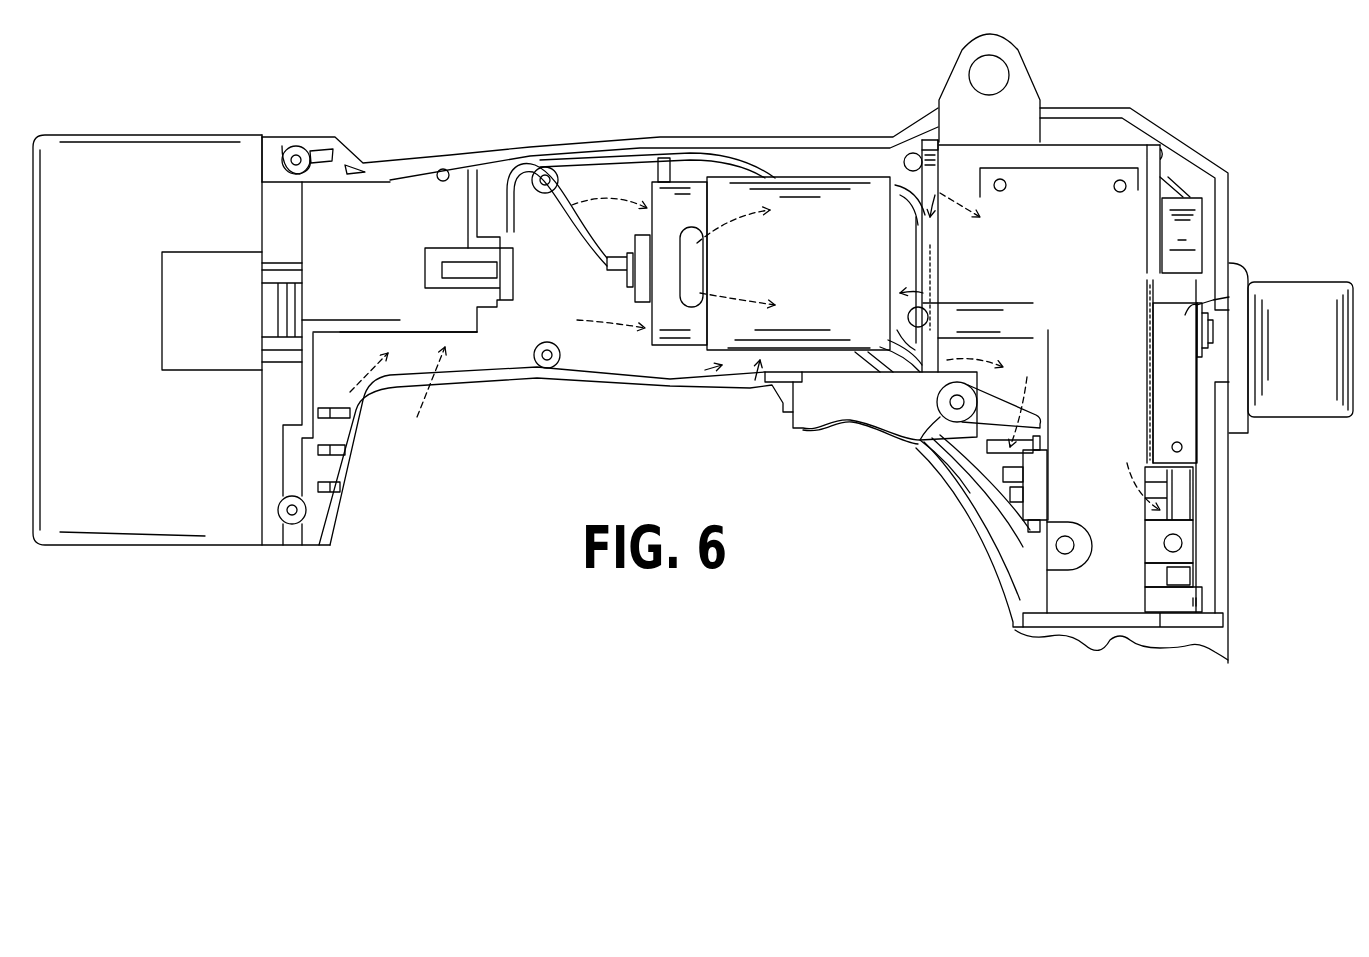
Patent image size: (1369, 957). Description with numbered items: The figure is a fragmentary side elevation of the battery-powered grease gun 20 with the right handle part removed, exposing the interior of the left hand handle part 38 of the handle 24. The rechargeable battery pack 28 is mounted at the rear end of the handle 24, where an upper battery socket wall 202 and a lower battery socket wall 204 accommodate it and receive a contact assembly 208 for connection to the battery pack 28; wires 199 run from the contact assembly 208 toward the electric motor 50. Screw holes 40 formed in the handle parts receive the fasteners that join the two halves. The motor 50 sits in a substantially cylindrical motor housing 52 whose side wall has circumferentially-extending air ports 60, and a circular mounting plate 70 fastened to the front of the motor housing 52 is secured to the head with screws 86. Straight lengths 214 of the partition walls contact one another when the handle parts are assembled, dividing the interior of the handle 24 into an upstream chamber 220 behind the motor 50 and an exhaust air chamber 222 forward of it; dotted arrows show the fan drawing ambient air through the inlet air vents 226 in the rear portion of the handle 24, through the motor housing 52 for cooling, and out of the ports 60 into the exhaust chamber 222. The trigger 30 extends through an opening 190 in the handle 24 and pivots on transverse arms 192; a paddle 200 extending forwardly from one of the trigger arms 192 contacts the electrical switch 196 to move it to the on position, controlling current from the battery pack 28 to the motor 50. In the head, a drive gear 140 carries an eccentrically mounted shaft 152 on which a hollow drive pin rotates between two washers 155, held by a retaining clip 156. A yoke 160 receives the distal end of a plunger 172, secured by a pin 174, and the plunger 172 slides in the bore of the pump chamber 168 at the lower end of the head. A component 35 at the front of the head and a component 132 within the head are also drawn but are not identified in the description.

The grease gun 20 is at (693, 106).
The handle 24 is at (817, 135).
The rechargeable battery pack 28 is at (170, 153).
The trigger 30 is at (873, 412).
The chuck 35 is at (1325, 407).
The left hand handle part 38 is at (515, 380).
The screw holes 40 is at (297, 150).
The electric motor 50 is at (753, 383).
The motor housing 52 is at (800, 200).
The air ports 60 is at (697, 267).
The mounting plate 70 is at (932, 252).
The screws 86 is at (907, 157).
The gear case 132 is at (1153, 220).
The drive gear 140 is at (1140, 310).
The eccentrically mounted shaft 152 is at (1213, 333).
The washers 155 is at (1202, 300).
The retaining clip 156 is at (1207, 318).
The yoke 160 is at (1187, 313).
The pump chamber 168 is at (1217, 647).
The plunger 172 is at (1180, 495).
The pin 174 is at (1182, 448).
The opening 190 is at (783, 412).
The transverse arms 192 is at (945, 398).
The electrical switch 196 is at (1037, 492).
The wires 199 is at (743, 160).
The paddle 200 is at (923, 428).
The upper battery socket wall 202 is at (480, 163).
The lower battery socket wall 204 is at (482, 320).
The contact assembly 208 is at (520, 277).
The straight lengths 214 is at (653, 173).
The upstream chamber 220 is at (397, 396).
The exhaust air chamber 222 is at (698, 380).
The inlet air vents 226 is at (353, 447).